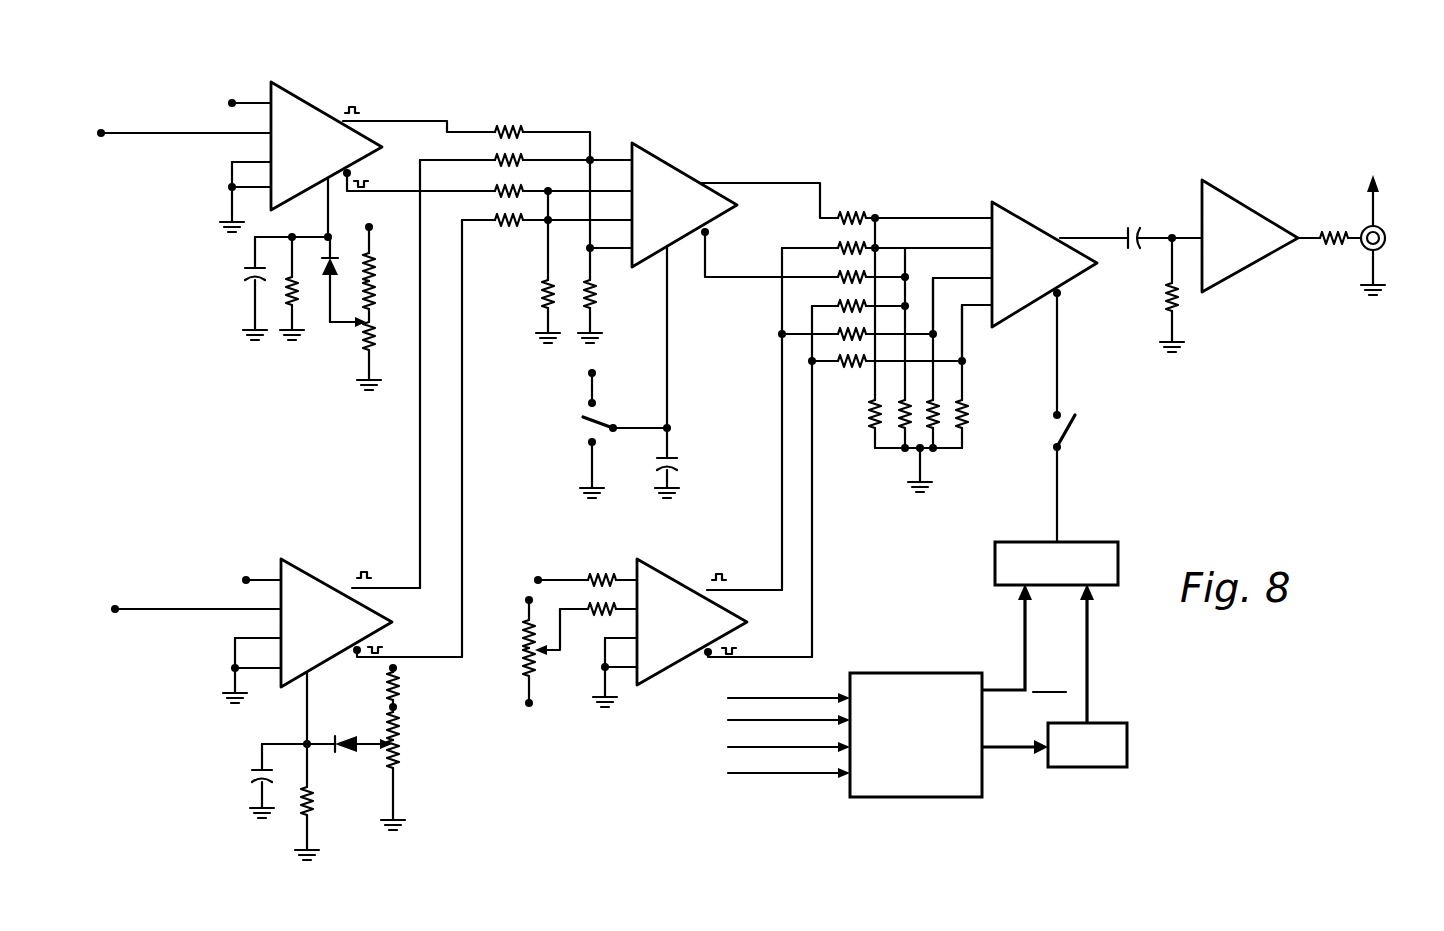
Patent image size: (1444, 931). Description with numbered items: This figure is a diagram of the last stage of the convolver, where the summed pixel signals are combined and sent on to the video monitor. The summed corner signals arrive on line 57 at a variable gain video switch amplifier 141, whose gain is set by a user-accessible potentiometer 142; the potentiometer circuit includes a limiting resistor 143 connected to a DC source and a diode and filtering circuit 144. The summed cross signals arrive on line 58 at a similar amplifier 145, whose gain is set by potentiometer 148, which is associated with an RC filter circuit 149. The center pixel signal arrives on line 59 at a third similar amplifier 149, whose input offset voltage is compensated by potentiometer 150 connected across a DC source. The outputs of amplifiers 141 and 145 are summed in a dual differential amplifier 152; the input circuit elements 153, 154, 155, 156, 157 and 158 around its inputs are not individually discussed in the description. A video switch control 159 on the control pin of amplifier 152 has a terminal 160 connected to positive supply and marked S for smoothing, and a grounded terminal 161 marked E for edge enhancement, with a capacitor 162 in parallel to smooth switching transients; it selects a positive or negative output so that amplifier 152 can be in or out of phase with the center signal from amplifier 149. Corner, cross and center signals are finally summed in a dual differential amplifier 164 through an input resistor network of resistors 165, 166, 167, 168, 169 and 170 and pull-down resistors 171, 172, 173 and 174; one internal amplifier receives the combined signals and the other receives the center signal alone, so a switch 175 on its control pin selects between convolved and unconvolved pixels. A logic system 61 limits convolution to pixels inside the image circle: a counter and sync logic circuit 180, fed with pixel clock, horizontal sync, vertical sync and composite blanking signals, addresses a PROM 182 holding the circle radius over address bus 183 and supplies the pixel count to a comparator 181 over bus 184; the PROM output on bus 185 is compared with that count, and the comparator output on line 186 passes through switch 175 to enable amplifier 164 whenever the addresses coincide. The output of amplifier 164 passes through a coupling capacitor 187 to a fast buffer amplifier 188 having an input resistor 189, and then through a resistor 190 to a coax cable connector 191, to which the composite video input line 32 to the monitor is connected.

The composite video signal input line 32 is at (1377, 212).
The output line 57 is at (122, 140).
The output line 58 is at (153, 612).
The output line 59 is at (534, 579).
The logic system 61 is at (1049, 682).
The amplifier 141 is at (312, 88).
The potentiometer 142 is at (345, 333).
The limiting resistor 143 is at (372, 260).
The diode and filtering circuit 144 is at (263, 348).
The variable gain video switch amplifier 145 is at (307, 578).
The potentiometer 148 is at (403, 742).
The amplifier 149 is at (296, 812).
The potentiometer 150 is at (534, 659).
The amplifier 152 is at (668, 171).
The resistor 153 is at (508, 128).
The resistor 154 is at (505, 155).
The resistor 155 is at (505, 185).
The resistor 156 is at (506, 232).
The resistor 157 is at (545, 293).
The resistor 158 is at (593, 298).
The video switch control 159 is at (562, 426).
The terminal 160 is at (587, 405).
The terminal 161 is at (587, 445).
The capacitor 162 is at (678, 461).
The amplifier 164 is at (1030, 224).
The resistor 165 is at (866, 214).
The resistor 166 is at (838, 244).
The resistor 167 is at (838, 273).
The resistor 168 is at (838, 303).
The resistor 169 is at (838, 332).
The resistor 170 is at (846, 367).
The pull-down resistor 171 is at (870, 413).
The pull-down resistor 172 is at (897, 427).
The pull-down resistor 173 is at (936, 422).
The pull-down resistor 174 is at (966, 407).
The switch 175 is at (1077, 428).
The counter and sync logic circuit 180 is at (915, 795).
The comparator 181 is at (1121, 546).
The programmable read-only memory (PROM) 182 is at (1100, 768).
The address bus 183 is at (1010, 753).
The bus 184 is at (1020, 628).
The bus 185 is at (1100, 653).
The output line 186 is at (1060, 481).
The coupling capacitor 187 is at (1137, 226).
The fast buffer amplifier 188 is at (1247, 209).
The resistor 189 is at (1165, 302).
The resistor 190 is at (1330, 246).
The coax cable connector 191 is at (1385, 245).